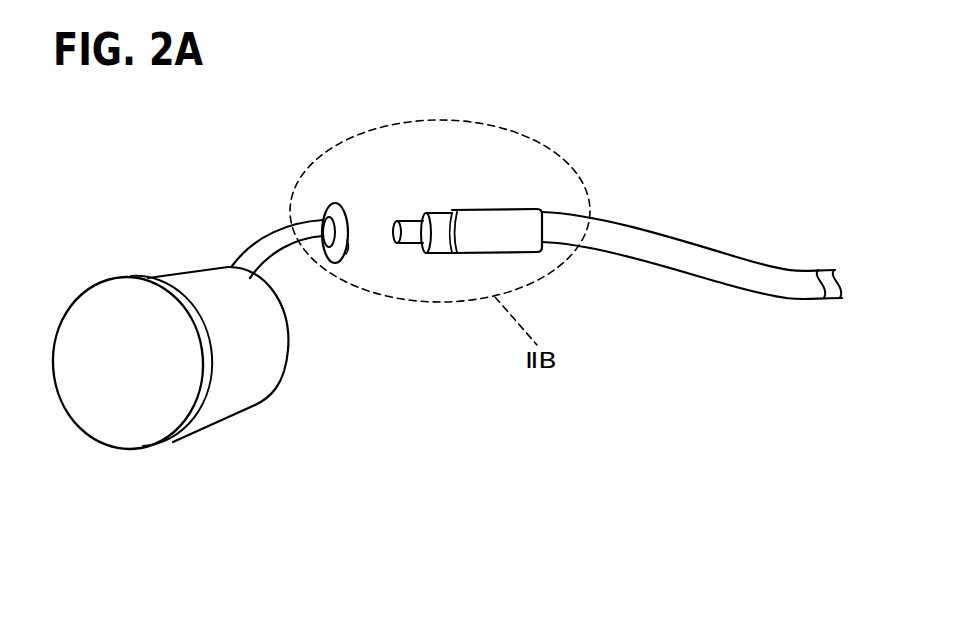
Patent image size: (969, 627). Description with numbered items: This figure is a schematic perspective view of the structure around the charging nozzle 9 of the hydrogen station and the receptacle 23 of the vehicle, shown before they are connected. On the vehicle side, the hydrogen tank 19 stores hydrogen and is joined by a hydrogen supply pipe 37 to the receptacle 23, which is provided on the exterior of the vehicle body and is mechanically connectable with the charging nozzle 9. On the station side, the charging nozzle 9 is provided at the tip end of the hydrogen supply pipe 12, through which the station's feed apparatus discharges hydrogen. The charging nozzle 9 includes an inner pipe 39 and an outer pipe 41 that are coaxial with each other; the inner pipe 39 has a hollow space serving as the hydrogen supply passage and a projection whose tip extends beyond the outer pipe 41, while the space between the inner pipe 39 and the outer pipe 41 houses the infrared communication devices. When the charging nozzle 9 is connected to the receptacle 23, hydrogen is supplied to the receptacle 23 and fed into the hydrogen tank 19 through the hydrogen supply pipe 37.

The hydrogen tank 19 is at (150, 277).
The hydrogen supply pipe 37 is at (247, 259).
The receptacle 23 is at (345, 222).
The inner pipe 39 is at (405, 222).
The outer pipe 41 is at (440, 222).
The charging nozzle 9 is at (490, 222).
The hydrogen supply pipe 12 is at (722, 278).